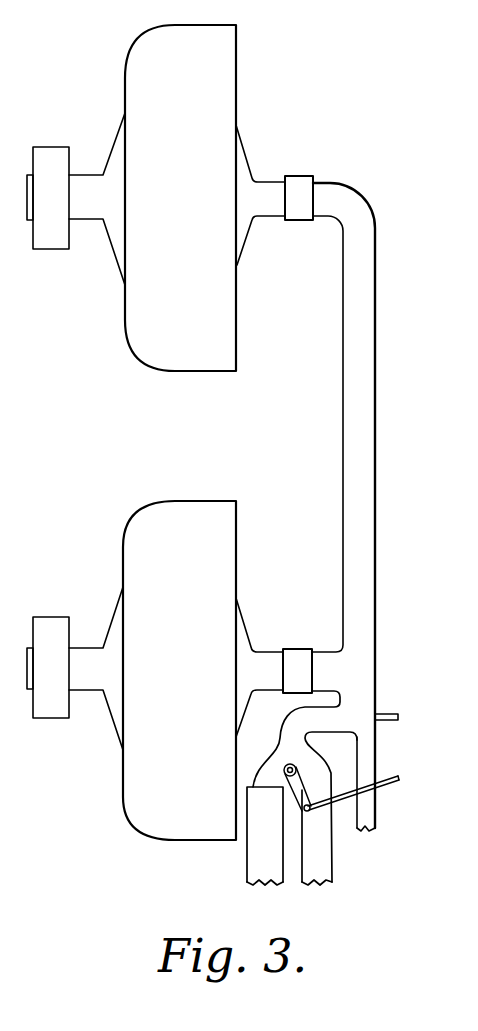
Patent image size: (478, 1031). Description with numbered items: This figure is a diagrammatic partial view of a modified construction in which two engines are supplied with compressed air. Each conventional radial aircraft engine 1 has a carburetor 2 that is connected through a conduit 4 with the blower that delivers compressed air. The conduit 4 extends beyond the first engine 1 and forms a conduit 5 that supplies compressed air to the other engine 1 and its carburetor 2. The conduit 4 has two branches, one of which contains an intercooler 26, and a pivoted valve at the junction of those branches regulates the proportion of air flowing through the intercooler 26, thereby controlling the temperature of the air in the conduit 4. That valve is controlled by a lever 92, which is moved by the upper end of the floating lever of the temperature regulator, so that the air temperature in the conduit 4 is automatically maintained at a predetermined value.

The radial aircraft engine 1 is at (243, 168).
The carburetor 2 is at (296, 218).
The conduit 4 is at (299, 752).
The conduit 5 is at (364, 491).
The intercooler 26 is at (246, 873).
The lever 92 is at (303, 808).